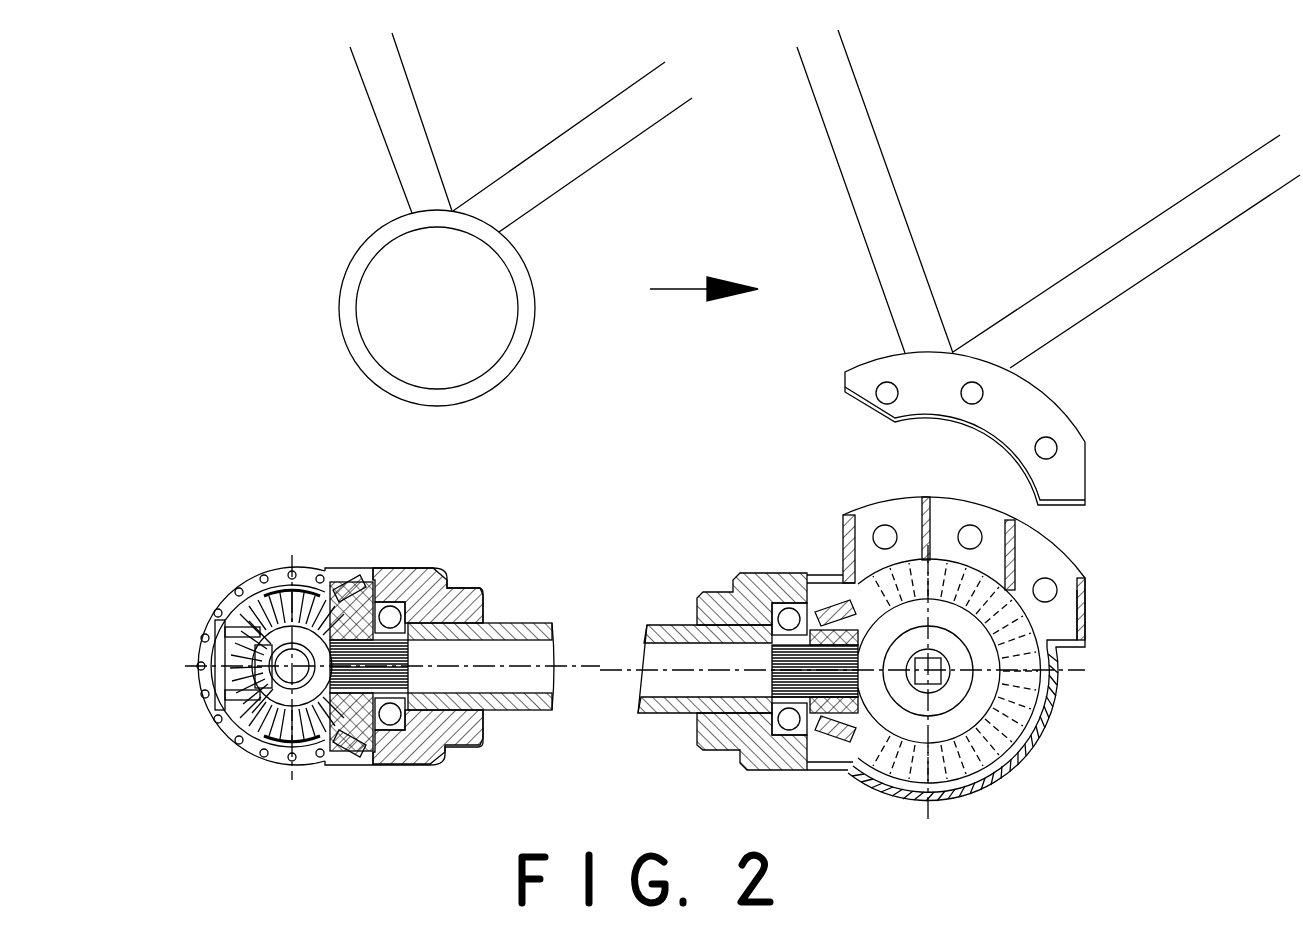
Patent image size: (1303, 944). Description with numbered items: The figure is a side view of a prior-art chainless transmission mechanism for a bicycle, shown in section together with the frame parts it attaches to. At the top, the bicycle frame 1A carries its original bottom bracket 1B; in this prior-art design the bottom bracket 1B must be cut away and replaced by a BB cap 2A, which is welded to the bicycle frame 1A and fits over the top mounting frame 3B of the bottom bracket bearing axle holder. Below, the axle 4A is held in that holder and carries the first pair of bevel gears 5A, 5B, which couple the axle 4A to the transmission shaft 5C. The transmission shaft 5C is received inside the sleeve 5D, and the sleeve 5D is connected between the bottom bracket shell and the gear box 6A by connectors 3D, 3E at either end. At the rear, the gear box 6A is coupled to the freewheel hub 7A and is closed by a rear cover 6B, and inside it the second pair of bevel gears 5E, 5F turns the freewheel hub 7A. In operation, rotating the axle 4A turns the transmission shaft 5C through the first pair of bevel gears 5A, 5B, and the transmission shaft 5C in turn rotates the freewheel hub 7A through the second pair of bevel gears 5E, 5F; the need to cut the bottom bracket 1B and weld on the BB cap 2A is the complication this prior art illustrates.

The bicycle frame 1A is at (1063, 332).
The bottom bracket 1B is at (523, 338).
The BB cap 2A is at (1053, 417).
The top mounting frame 3B is at (1090, 601).
The connector 3D is at (735, 592).
The connector 3E is at (420, 578).
The axle 4A is at (945, 690).
The first bevel gear 5A is at (968, 770).
The first bevel gear 5B is at (830, 740).
The transmission shaft 5C is at (657, 625).
The sleeve 5D is at (515, 623).
The second bevel gear 5E is at (357, 740).
The second bevel gear 5F is at (278, 590).
The gear box 6A is at (345, 578).
The rear cover 6B is at (195, 678).
The freewheel hub 7A is at (200, 614).